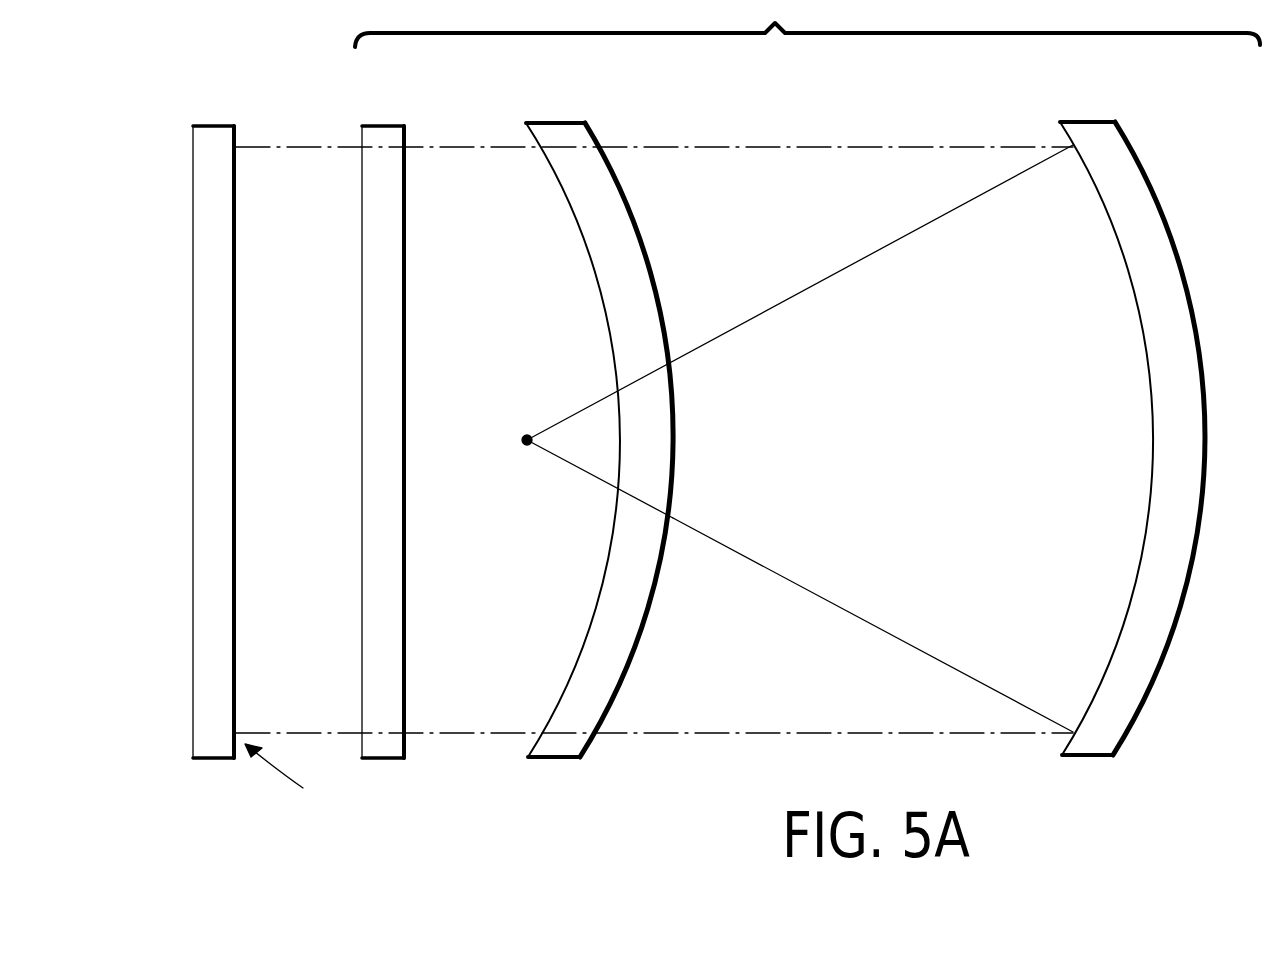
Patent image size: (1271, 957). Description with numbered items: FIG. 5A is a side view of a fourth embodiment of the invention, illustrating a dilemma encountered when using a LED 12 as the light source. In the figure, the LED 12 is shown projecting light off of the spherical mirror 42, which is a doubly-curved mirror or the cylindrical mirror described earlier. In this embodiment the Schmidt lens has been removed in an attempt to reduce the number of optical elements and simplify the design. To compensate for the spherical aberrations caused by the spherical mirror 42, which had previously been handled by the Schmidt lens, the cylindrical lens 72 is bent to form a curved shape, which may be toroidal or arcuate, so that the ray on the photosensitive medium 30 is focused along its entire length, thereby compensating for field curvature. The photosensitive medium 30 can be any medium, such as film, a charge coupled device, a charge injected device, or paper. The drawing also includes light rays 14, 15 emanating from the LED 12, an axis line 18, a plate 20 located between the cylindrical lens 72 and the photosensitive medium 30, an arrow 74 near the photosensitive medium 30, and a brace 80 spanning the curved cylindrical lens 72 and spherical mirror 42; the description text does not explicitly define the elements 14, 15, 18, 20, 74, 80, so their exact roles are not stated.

The LED 12 is at (527, 432).
The light ray 14 is at (583, 470).
The light ray 15 is at (840, 603).
The optical axis 18 is at (852, 147).
The plate 20 is at (384, 138).
The photosensitive medium 30 is at (213, 140).
The spherical mirror 42 is at (1148, 660).
The cylindrical lens 72 is at (560, 128).
The light direction arrow 74 is at (654, 768).
The optical assembly 80 is at (807, 23).